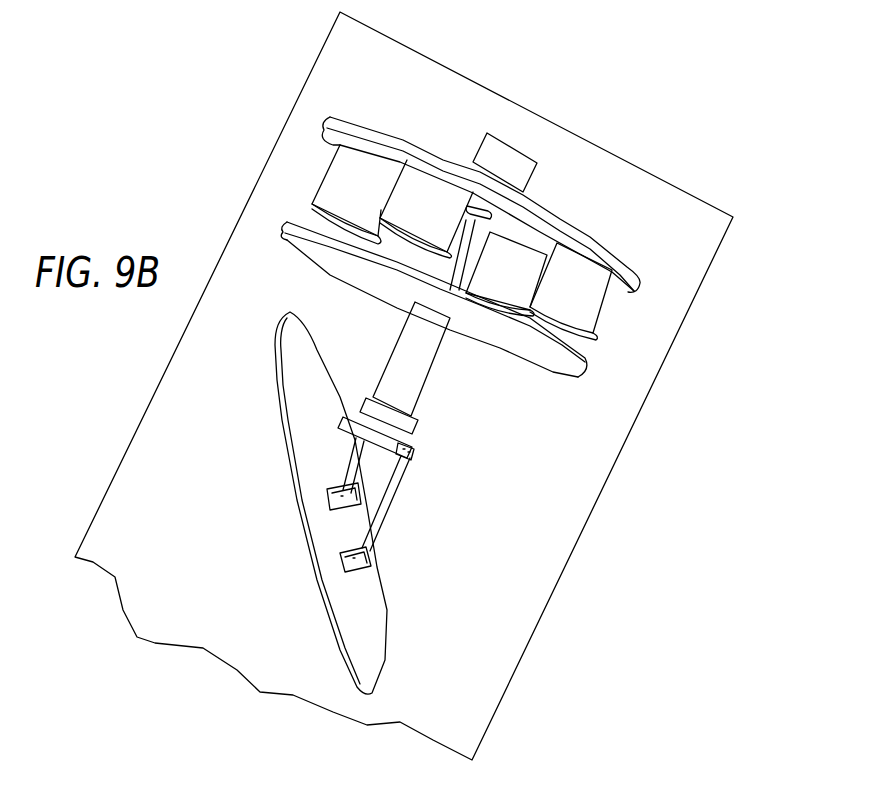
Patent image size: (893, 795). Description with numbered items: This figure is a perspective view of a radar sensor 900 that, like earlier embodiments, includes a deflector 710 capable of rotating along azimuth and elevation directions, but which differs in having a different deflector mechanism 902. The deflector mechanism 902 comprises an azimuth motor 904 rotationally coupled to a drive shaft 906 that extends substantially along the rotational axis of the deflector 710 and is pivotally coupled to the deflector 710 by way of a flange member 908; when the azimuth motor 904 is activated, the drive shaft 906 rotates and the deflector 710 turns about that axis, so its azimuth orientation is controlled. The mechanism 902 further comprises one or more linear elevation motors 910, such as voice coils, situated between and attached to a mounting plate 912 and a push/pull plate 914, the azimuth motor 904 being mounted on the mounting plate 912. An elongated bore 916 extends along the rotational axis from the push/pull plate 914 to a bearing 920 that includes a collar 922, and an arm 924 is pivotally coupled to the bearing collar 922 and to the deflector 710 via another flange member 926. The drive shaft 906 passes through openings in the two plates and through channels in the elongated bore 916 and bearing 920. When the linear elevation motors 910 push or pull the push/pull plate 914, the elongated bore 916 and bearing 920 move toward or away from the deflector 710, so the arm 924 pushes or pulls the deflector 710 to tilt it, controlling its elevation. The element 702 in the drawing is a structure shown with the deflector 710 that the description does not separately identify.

The radar sensor 900 is at (687, 157).
The deflector mechanism 902 is at (387, 113).
The azimuth motor 904 is at (512, 160).
The drive shaft 906 is at (360, 463).
The flange member 908 is at (326, 500).
The linear elevation motor 910 is at (345, 182).
The mounting plate 912 is at (623, 232).
The push/pull plate 914 is at (543, 367).
The elongated bore 916 is at (427, 357).
The bearing 920 is at (397, 418).
The collar 922 is at (357, 413).
The arm 924 is at (383, 522).
The flange member 926 is at (350, 580).
The board 702 is at (590, 518).
The deflector 710 is at (317, 587).